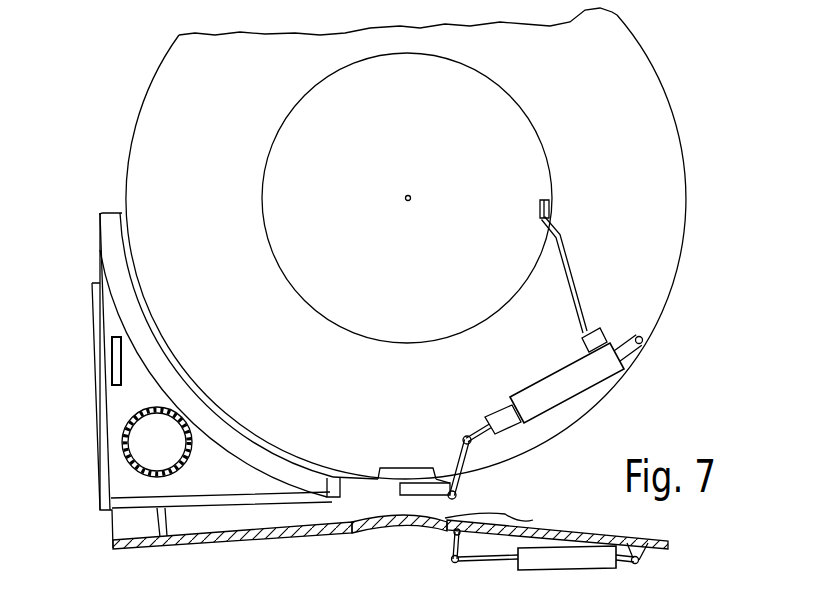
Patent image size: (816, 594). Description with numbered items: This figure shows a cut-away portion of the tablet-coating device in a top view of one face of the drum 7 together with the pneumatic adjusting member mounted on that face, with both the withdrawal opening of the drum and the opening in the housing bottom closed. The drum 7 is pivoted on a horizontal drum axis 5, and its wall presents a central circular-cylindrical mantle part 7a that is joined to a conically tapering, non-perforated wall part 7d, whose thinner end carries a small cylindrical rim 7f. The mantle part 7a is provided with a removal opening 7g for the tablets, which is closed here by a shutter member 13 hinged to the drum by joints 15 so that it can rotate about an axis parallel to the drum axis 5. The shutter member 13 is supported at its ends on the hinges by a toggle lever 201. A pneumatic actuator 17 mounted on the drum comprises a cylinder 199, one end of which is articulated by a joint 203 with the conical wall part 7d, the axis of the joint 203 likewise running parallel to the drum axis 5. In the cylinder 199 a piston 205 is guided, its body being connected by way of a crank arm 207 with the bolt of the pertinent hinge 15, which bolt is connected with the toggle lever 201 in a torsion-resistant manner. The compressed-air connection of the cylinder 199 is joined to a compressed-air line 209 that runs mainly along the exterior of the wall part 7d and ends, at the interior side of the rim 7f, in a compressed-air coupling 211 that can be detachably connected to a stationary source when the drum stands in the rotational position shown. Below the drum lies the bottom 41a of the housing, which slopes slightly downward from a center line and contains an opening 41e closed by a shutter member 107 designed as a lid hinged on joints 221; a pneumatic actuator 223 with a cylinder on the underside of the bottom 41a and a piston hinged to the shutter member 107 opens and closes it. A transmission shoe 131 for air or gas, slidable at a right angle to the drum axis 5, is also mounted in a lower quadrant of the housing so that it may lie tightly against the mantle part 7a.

The drum axis 5 is at (408, 195).
The drum 7 is at (687, 178).
The circular-cylindrical mantle part 7a is at (677, 208).
The conical wall part 7d is at (629, 124).
The cylindrical rim 7f is at (534, 135).
The removal opening 7g is at (381, 473).
The shutter member 13 is at (392, 481).
The joints (hinges) 15 is at (465, 497).
The pneumatic actuator 17 is at (620, 372).
The bottom 41a is at (273, 541).
The opening 41e is at (498, 542).
The shutter member 107 is at (381, 538).
The transmission shoe 131 is at (107, 416).
The cylinder 199 is at (567, 360).
The toggle lever 201 is at (423, 496).
The joint 203 is at (648, 346).
The piston 205 is at (487, 421).
The crank arm 207 is at (458, 452).
The compressed-air line 209 is at (574, 278).
The compressed-air coupling 211 is at (548, 186).
The joints 221 is at (533, 520).
The pneumatic actuator 223 is at (593, 570).